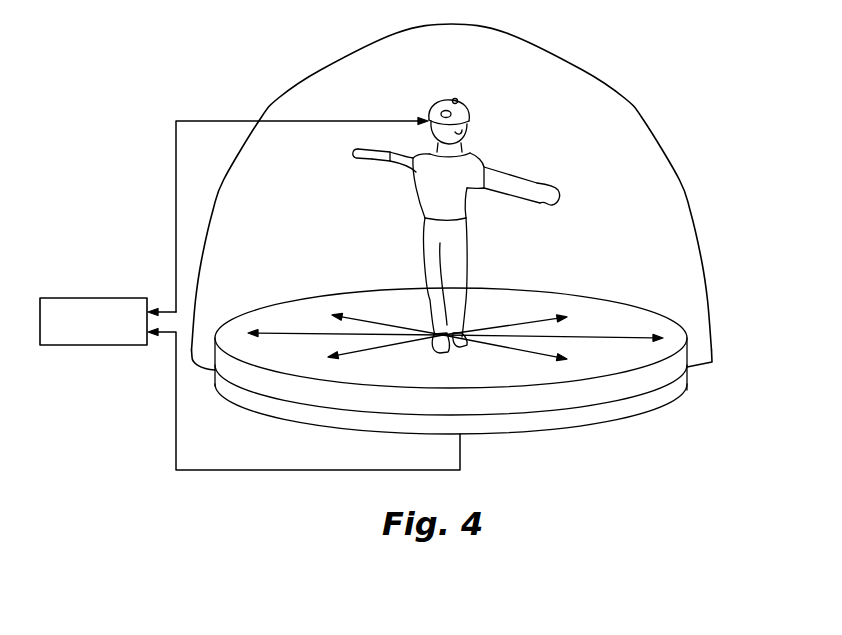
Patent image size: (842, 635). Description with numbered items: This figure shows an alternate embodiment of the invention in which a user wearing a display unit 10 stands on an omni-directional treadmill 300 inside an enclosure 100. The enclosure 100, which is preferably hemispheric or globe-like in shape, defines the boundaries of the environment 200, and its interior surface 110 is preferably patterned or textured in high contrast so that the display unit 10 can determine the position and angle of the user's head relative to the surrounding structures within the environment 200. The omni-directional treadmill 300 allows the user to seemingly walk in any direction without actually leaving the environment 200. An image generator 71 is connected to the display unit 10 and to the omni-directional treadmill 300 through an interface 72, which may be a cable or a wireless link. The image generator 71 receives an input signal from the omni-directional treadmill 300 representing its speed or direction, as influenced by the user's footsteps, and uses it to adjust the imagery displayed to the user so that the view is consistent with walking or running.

The enclosure 100 is at (437, 197).
The display unit 10 is at (425, 104).
The interior surface 110 is at (579, 76).
The environment 200 is at (630, 160).
The omni-directional treadmill 300 is at (610, 328).
The image generator 71 is at (105, 327).
The interface 72 is at (175, 213).